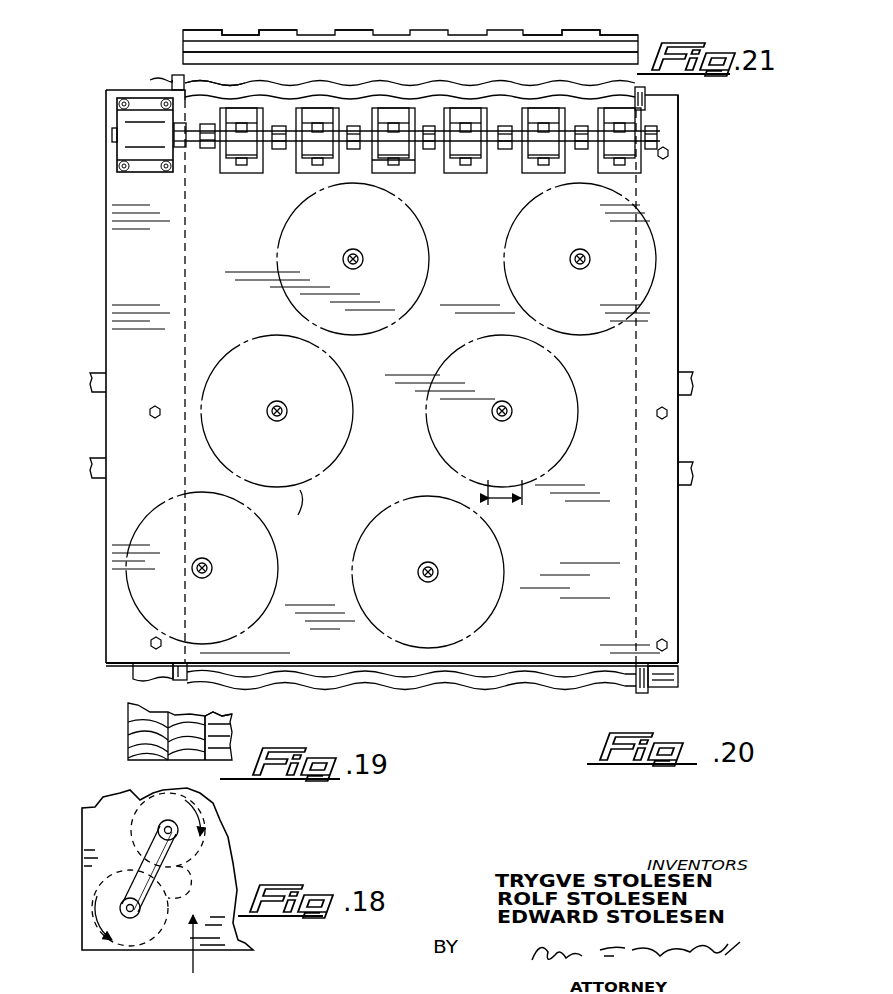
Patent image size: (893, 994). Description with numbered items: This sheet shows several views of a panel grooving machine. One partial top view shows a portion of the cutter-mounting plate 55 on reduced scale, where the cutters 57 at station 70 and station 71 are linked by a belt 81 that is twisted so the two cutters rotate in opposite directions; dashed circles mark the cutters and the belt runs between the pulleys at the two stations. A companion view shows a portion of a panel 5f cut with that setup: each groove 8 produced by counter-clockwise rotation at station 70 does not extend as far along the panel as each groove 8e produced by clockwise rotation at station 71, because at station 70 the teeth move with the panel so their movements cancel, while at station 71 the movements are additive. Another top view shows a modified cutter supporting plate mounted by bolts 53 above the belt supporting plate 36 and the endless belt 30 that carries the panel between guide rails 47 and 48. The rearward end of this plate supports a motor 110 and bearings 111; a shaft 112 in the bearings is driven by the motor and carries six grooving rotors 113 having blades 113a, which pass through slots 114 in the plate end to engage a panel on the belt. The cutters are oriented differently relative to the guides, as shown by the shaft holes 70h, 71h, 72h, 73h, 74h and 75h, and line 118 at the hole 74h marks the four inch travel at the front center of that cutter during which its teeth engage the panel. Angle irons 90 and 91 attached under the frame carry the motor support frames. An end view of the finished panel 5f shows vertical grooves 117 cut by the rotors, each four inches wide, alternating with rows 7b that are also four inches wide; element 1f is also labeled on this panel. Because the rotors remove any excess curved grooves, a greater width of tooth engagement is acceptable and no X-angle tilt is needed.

In FIG. 21, the panel 5f is at (178, 27).
In FIG. 19, the panel 5f is at (232, 722).
In FIG. 21, the panel 1f is at (180, 36).
In FIG. 21, the rows 7b is at (364, 29).
In FIG. 21, the vertical grooves 117 is at (613, 32).
In FIG. 20, the belt supporting plate 36 is at (152, 85).
In FIG. 20, the motor 110 is at (125, 143).
In FIG. 20, the endless belt 30 is at (210, 117).
In FIG. 20, the blades 113a is at (250, 120).
In FIG. 20, the shaft 112 is at (190, 148).
In FIG. 20, the bearings 111 is at (278, 150).
In FIG. 20, the slots 114 is at (415, 165).
In FIG. 20, the grooving rotors 113 is at (468, 150).
In FIG. 20, the cutter-mounting plate 55 is at (680, 192).
In FIG. 18, the cutter-mounting plate 55 is at (95, 832).
In FIG. 20, the shaft hole 72h is at (362, 252).
In FIG. 20, the shaft hole 75h is at (588, 250).
In FIG. 20, the shaft hole 71h is at (283, 402).
In FIG. 20, the shaft hole 74h is at (510, 402).
In FIG. 20, the shaft hole 70h is at (208, 558).
In FIG. 20, the shaft hole 73h is at (440, 574).
In FIG. 20, the angle iron 91 is at (88, 376).
In FIG. 20, the angle iron 90 is at (92, 480).
In FIG. 20, the cutters 57 is at (297, 490).
In FIG. 18, the cutters 57 is at (193, 882).
In FIG. 20, the line of tooth engagement 118 is at (510, 505).
In FIG. 20, the bolts 53 is at (130, 652).
In FIG. 20, the guide rail 47 is at (188, 664).
In FIG. 20, the guide rail 48 is at (642, 694).
In FIG. 19, the groove 8 is at (128, 740).
In FIG. 19, the groove 8e is at (208, 758).
In FIG. 18, the station 71 is at (160, 822).
In FIG. 18, the belt 81 is at (148, 853).
In FIG. 18, the station 70 is at (138, 918).